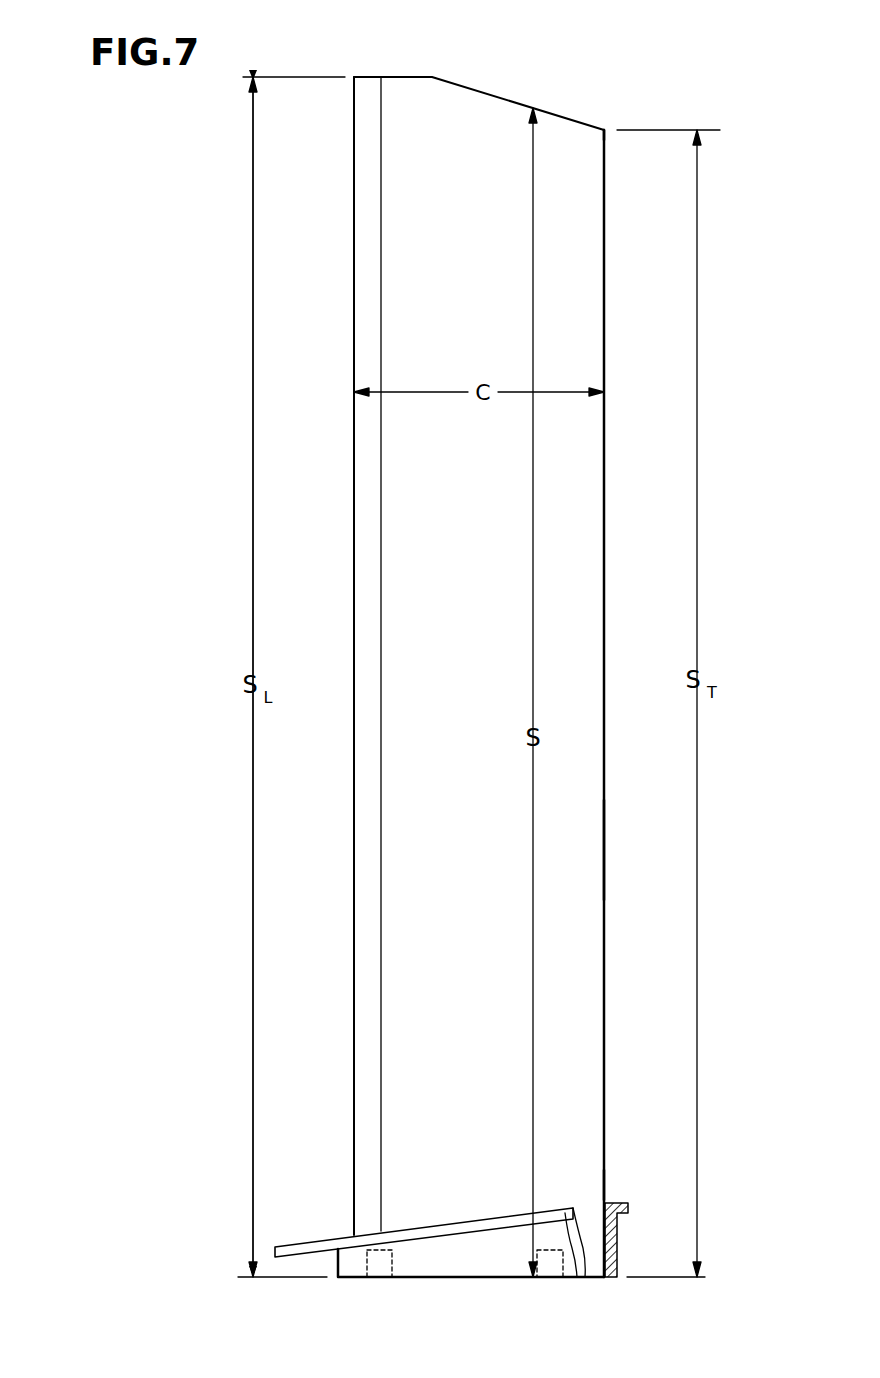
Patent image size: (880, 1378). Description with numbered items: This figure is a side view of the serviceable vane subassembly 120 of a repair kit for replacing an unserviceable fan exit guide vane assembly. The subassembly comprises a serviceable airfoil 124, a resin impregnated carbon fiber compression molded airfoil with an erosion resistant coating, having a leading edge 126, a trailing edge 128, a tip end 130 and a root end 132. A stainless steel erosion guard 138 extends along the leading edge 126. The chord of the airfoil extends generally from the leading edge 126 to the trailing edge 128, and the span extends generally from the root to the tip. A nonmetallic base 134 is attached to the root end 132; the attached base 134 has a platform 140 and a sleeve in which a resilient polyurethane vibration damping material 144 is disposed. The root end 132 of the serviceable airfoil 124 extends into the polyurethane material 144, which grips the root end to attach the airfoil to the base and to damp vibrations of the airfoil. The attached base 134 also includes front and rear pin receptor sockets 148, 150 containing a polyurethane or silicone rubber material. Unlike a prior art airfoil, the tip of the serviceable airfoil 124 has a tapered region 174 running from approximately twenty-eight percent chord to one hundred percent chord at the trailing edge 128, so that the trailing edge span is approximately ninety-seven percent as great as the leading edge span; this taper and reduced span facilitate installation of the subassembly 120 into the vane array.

The serviceable vane subassembly 120 is at (187, 513).
The serviceable airfoil 124 is at (577, 873).
The leading edge 126 is at (353, 598).
The trailing edge 128 is at (605, 642).
The tip end 130 is at (588, 143).
The root end 132 is at (588, 1177).
The nonmetallic base 134 is at (617, 1263).
The stainless steel erosion guard 138 is at (362, 465).
The platform 140 is at (412, 1228).
The resilient polyurethane vibration damping material 144 is at (563, 1208).
The front pin receptor socket 148 is at (385, 1268).
The rear pin receptor socket 150 is at (552, 1270).
The tapered region 174 is at (493, 88).